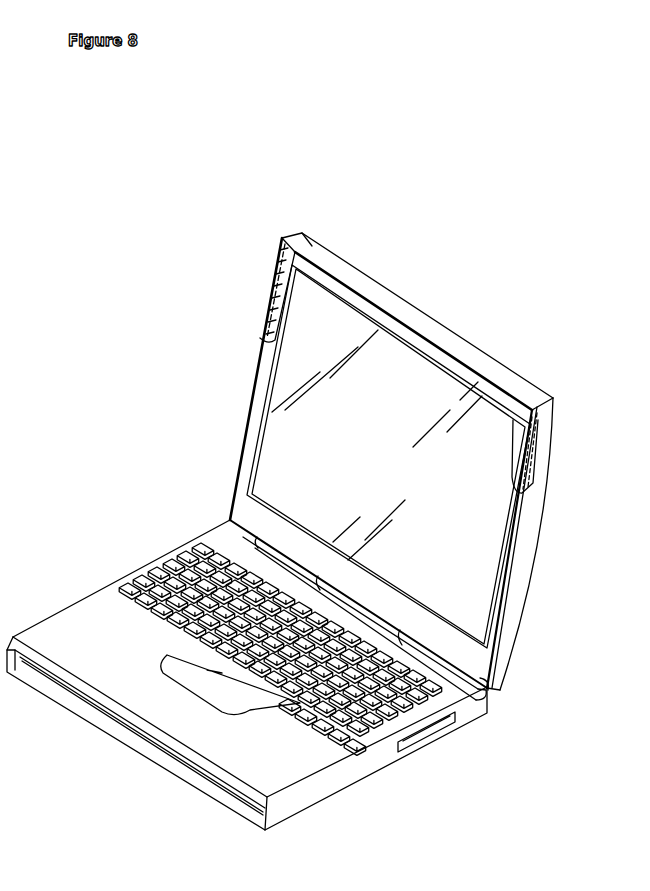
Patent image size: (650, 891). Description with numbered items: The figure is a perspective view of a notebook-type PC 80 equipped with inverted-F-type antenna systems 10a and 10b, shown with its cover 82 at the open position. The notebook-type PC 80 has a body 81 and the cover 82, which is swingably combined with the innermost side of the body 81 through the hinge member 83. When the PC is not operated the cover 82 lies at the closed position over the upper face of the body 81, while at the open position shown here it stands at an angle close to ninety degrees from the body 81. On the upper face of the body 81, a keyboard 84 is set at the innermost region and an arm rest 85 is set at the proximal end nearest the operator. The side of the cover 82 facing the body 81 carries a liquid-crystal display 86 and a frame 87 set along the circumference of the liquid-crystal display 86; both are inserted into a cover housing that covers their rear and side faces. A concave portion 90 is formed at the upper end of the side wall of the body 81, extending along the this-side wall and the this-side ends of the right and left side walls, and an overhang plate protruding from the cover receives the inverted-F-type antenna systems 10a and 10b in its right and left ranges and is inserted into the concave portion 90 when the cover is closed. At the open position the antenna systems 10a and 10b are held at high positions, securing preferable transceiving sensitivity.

The notebook-type PC 80 is at (160, 374).
The body 81 is at (236, 754).
The cover 82 is at (518, 362).
The hinge member 83 is at (430, 647).
The keyboard 84 is at (175, 560).
The arm rest 85 is at (163, 702).
The liquid-crystal display 86 is at (302, 293).
The frame 87 is at (373, 283).
The concave portion 90 is at (67, 678).
The inverted-F-type antenna system 10a is at (270, 289).
The inverted-F-type antenna system 10b is at (534, 459).